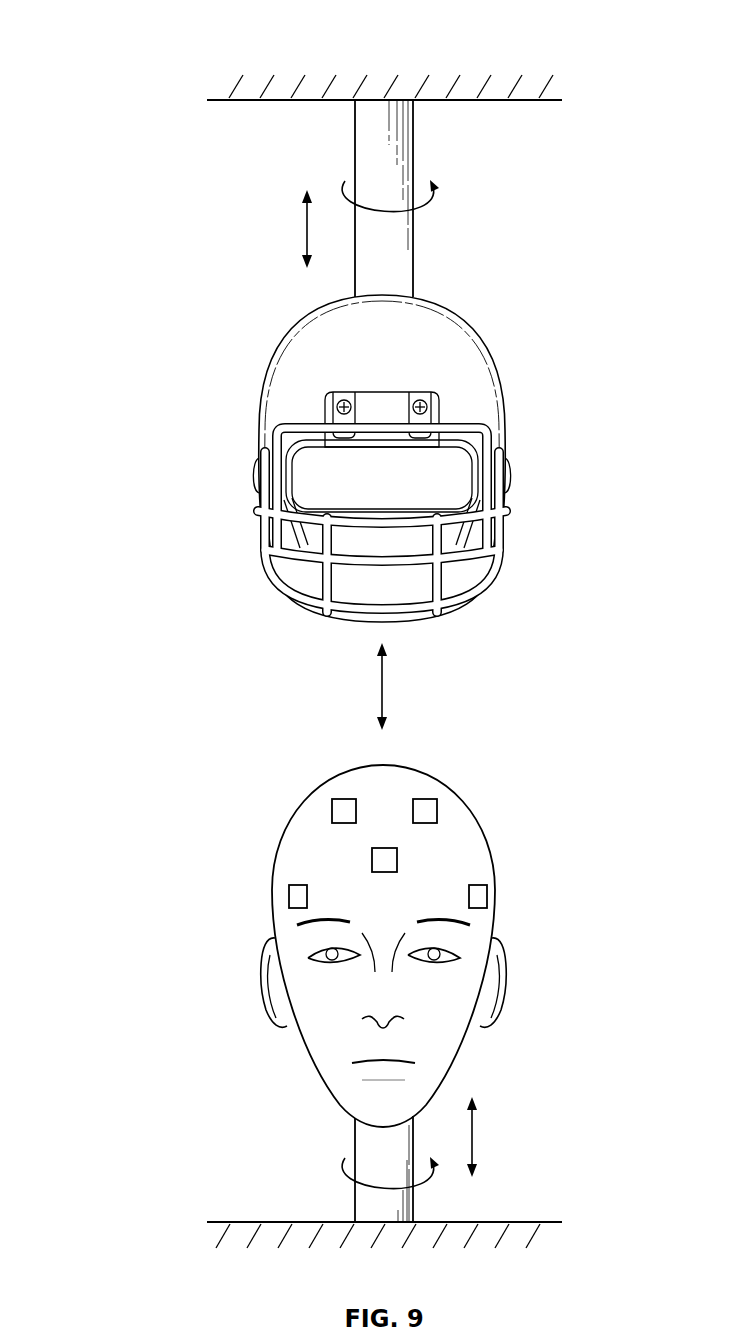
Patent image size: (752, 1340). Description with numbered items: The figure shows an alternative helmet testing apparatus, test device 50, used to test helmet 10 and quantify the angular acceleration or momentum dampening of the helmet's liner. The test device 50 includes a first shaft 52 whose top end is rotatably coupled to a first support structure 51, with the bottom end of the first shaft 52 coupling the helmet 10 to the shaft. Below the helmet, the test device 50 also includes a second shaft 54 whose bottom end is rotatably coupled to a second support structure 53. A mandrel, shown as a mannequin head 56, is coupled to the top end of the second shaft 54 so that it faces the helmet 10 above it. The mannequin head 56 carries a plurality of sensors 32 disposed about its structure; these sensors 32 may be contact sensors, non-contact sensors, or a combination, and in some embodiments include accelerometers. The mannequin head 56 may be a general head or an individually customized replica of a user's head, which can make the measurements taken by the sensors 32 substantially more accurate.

The helmet 10 is at (437, 345).
The sensors 32 is at (343, 813).
The test device 50 is at (100, 38).
The first support structure 51 is at (565, 38).
The first shaft 52 is at (381, 148).
The second support structure 53 is at (210, 1272).
The second shaft 54 is at (381, 1155).
The mannequin head 56 is at (453, 827).